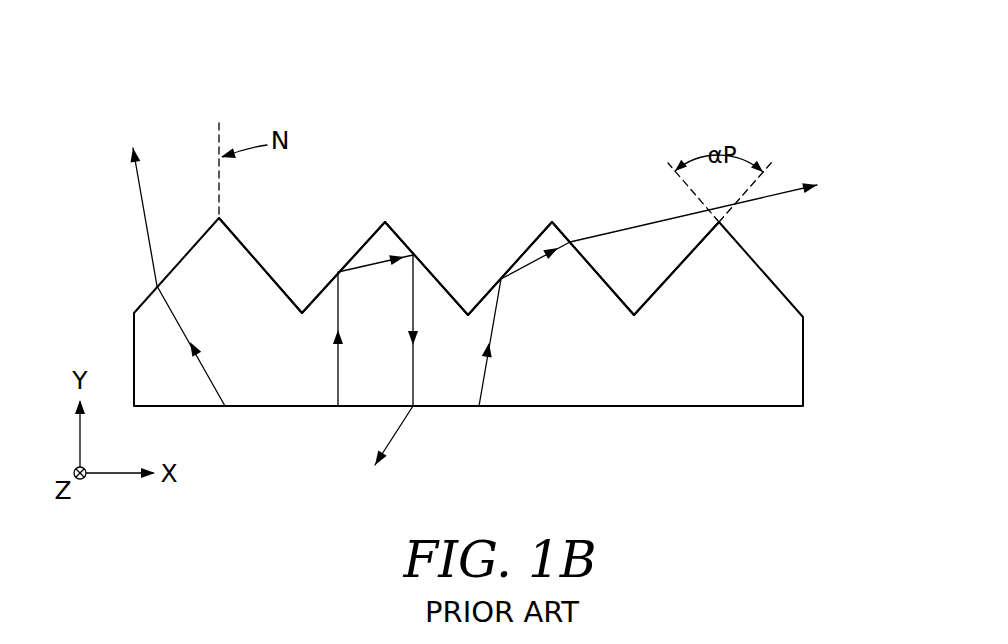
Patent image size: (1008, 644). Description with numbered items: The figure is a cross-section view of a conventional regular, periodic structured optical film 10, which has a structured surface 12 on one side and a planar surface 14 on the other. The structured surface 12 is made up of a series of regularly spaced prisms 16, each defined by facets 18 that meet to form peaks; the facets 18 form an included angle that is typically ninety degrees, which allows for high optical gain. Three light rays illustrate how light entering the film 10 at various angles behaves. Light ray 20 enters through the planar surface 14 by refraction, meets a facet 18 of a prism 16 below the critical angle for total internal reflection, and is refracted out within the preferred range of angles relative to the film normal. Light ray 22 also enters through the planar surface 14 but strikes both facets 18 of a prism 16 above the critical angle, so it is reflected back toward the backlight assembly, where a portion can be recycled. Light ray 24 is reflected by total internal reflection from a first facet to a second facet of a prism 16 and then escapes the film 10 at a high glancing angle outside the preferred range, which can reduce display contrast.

The structured optical film 10 is at (468, 274).
The structured surface 12 is at (385, 220).
The planar surface 14 is at (698, 408).
The prisms 16 is at (331, 293).
The facets 18 is at (517, 257).
The light ray 20 is at (142, 218).
The light ray 22 is at (373, 262).
The light ray 24 is at (681, 216).